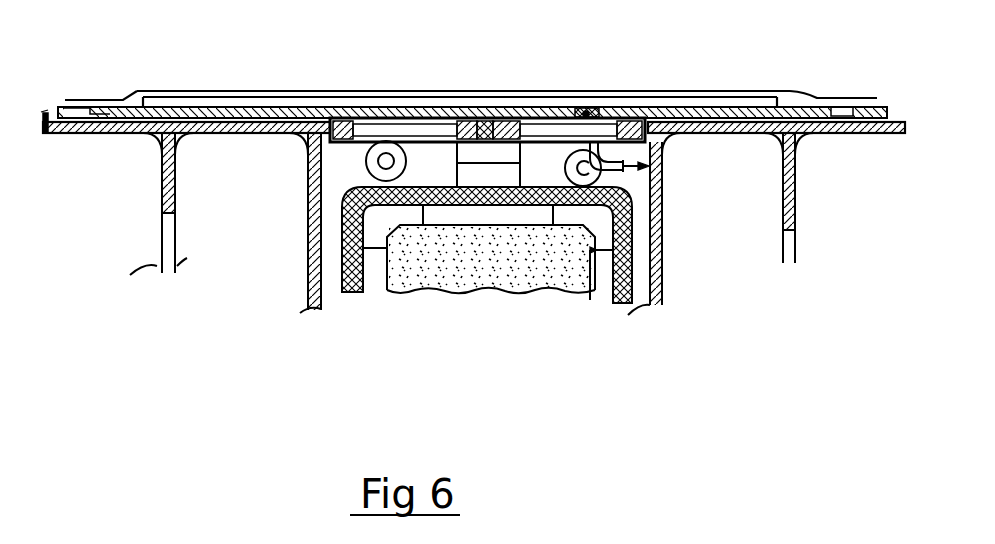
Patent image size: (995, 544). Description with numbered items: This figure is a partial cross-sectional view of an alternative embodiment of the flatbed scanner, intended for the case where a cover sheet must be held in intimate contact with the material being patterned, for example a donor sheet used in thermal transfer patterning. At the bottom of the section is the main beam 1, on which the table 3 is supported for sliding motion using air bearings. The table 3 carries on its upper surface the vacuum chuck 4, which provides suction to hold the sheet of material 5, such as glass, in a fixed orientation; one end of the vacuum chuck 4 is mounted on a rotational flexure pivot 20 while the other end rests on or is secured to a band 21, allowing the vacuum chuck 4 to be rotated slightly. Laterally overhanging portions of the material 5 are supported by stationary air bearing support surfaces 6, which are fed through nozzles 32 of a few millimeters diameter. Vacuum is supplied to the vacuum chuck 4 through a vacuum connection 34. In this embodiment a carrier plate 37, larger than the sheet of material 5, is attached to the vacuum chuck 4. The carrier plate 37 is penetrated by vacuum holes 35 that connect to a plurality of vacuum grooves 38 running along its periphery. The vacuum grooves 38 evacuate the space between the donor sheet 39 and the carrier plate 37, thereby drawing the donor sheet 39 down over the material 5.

The main beam 1 is at (417, 278).
The table 3 is at (350, 293).
The vacuum chuck 4 is at (558, 115).
The material 5 is at (177, 107).
The stationary air bearing support surfaces 6 is at (36, 160).
The rotational flexure pivot 20 is at (457, 153).
The band 21 is at (366, 166).
The nozzles 32 is at (238, 140).
The vacuum connection 34 is at (650, 163).
The vacuum holes 35 is at (585, 113).
The carrier plate 37 is at (263, 117).
The vacuum grooves 38 is at (102, 106).
The donor sheet 39 is at (377, 90).